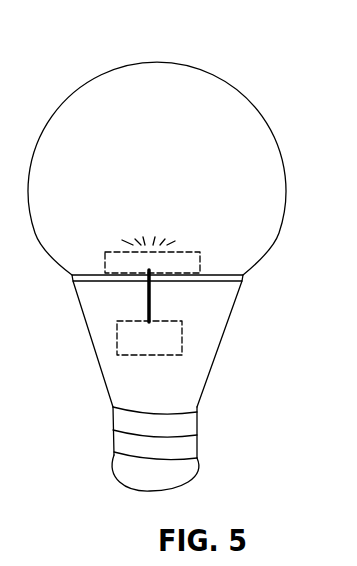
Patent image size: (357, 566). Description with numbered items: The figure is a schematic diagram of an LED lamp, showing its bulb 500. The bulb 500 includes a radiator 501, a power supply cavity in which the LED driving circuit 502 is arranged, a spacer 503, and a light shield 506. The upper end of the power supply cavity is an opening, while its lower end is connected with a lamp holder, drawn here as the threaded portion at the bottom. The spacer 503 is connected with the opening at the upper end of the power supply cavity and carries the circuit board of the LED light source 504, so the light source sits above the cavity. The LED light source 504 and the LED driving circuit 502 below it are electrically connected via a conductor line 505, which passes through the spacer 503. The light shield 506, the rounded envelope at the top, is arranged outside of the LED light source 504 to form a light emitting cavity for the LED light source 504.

The bulb 500 is at (244, 61).
The radiator 501 is at (218, 352).
The LED driving circuit 502 is at (175, 340).
The spacer 503 is at (225, 277).
The LED light source 504 is at (200, 253).
The conductor line 505 is at (148, 300).
The light shield 506 is at (270, 123).